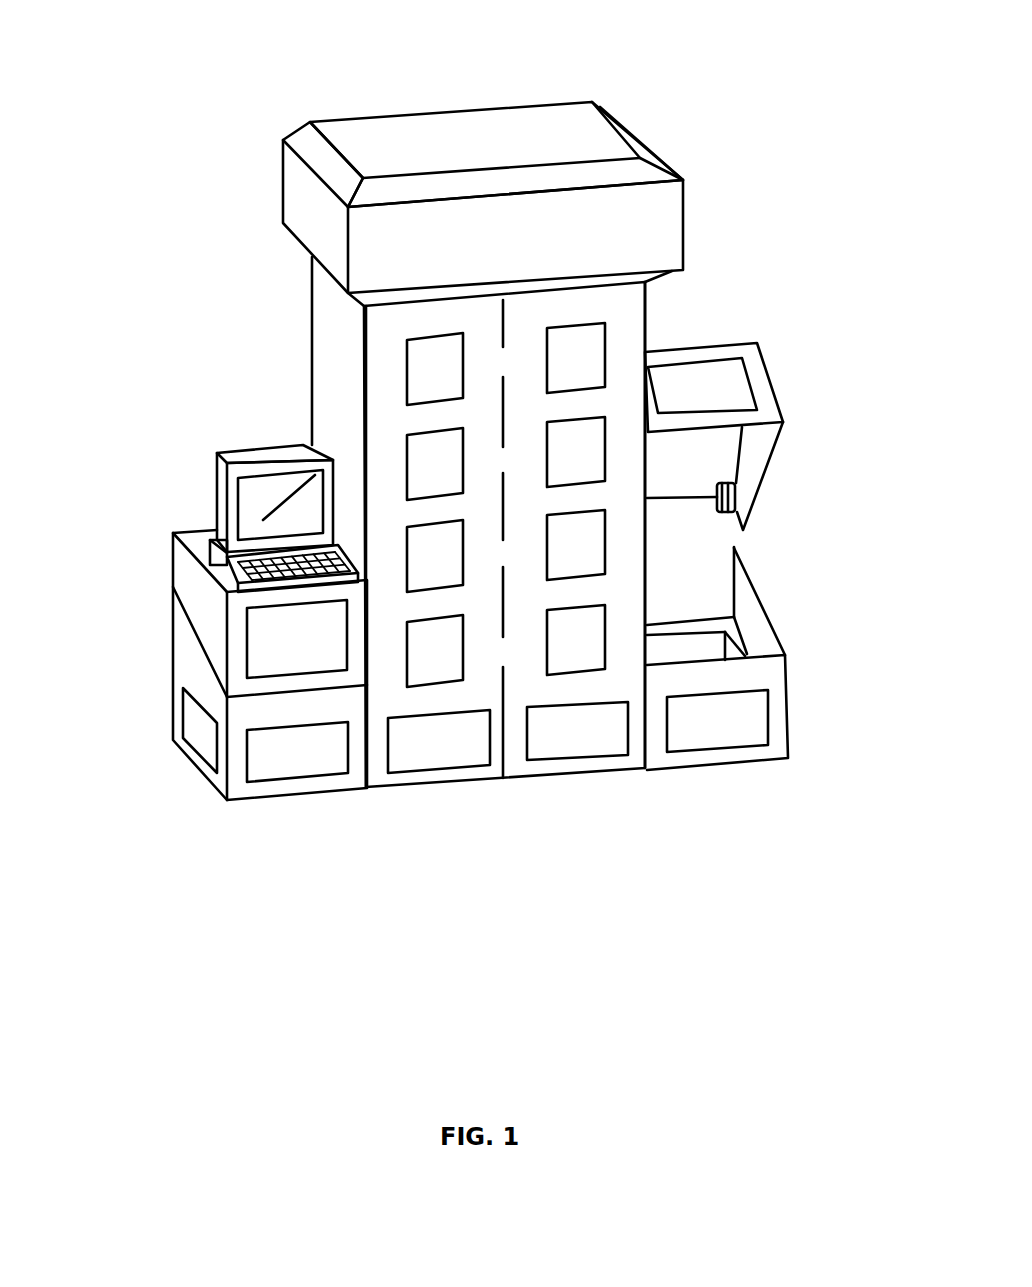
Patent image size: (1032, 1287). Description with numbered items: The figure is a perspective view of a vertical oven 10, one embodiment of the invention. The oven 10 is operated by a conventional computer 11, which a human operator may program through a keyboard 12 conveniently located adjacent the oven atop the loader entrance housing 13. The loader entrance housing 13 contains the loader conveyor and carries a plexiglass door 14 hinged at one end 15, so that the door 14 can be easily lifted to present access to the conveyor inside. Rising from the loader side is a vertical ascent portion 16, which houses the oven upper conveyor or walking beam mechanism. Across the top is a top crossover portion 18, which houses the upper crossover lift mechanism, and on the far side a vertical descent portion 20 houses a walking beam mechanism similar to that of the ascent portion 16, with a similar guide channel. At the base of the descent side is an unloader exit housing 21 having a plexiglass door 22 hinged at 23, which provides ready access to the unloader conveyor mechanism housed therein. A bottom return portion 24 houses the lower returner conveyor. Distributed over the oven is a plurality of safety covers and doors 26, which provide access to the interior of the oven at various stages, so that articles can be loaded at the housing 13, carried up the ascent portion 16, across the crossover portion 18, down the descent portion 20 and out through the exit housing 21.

The vertical oven 10 is at (627, 406).
The top crossover portion 18 is at (557, 208).
The vertical ascent portion 16 is at (322, 297).
The vertical descent portion 20 is at (630, 310).
The safety covers and doors 26 is at (547, 368).
The bottom return portion 24 is at (530, 747).
The plexiglass door 22 is at (742, 393).
The hinge 23 is at (735, 497).
The unloader exit housing 21 is at (790, 682).
The computer 11 is at (232, 455).
The hinged end 15 is at (203, 568).
The keyboard 12 is at (232, 577).
The plexiglass door 14 is at (255, 627).
The loader entrance housing 13 is at (223, 697).